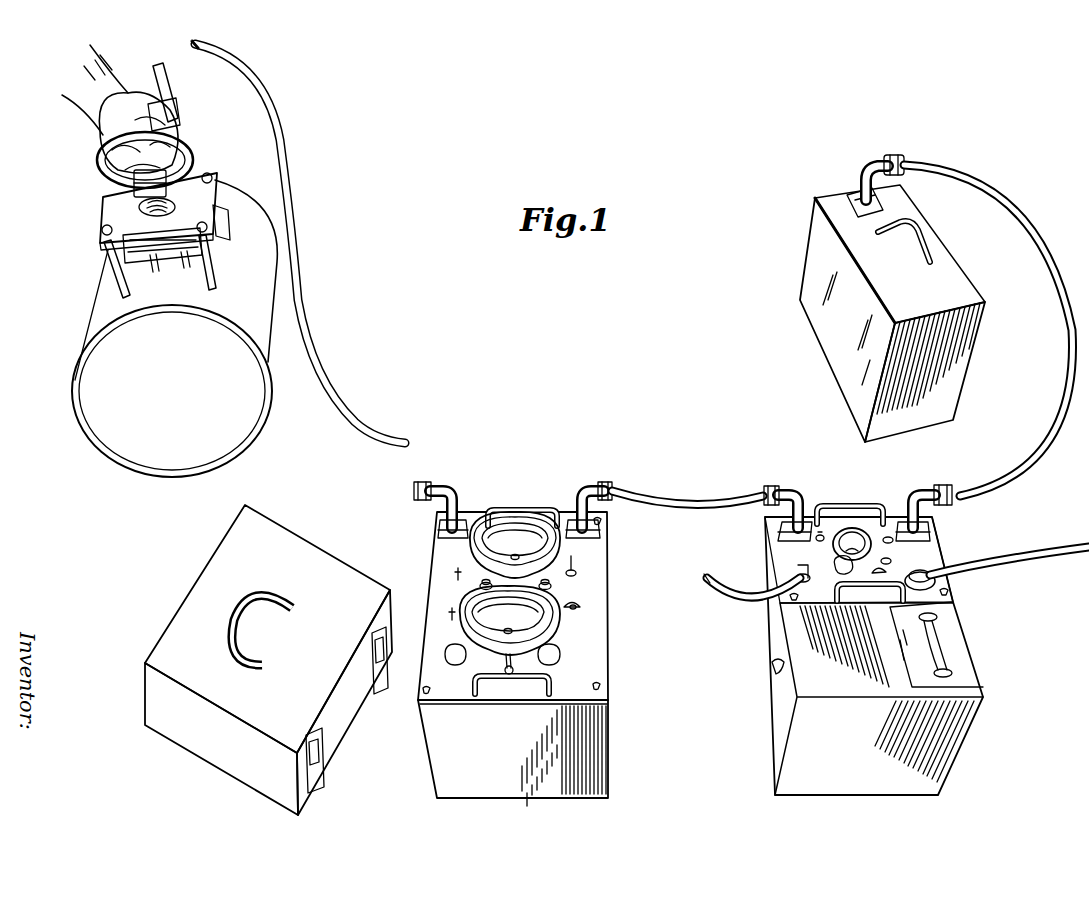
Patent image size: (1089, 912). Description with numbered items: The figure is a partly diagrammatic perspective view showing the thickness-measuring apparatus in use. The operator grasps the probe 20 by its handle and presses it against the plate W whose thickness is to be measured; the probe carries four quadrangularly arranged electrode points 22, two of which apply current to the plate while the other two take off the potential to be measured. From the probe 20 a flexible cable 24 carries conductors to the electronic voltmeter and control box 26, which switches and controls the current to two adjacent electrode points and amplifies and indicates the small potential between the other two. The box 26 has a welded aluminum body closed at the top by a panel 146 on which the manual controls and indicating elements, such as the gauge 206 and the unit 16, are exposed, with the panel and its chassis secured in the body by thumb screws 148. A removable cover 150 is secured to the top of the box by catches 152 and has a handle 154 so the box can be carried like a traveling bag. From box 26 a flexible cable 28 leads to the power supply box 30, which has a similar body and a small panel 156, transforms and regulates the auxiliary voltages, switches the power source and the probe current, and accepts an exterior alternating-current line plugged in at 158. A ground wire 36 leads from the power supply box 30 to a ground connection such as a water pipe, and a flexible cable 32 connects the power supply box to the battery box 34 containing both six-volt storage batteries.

The plate W is at (83, 384).
The probe 20 is at (112, 213).
The electrode points 22 is at (182, 270).
The flexible cable 24 is at (302, 233).
The pump unit 16 is at (519, 644).
The electronic voltmeter and control box 26 is at (608, 578).
The panel 146 is at (441, 551).
The thumb screws 148 is at (607, 520).
The pressure gauge 206 is at (555, 625).
The flexible cable 28 is at (693, 505).
The power supply box 30 is at (903, 640).
The small panel 156 is at (928, 552).
The A. C. line plug connection 158 is at (950, 586).
The catches 152 is at (775, 673).
The ground wire 36 is at (719, 590).
The battery box 34 is at (812, 260).
The flexible cable 32 is at (1060, 403).
The removable cover 150 is at (268, 660).
The handle 154 is at (227, 640).